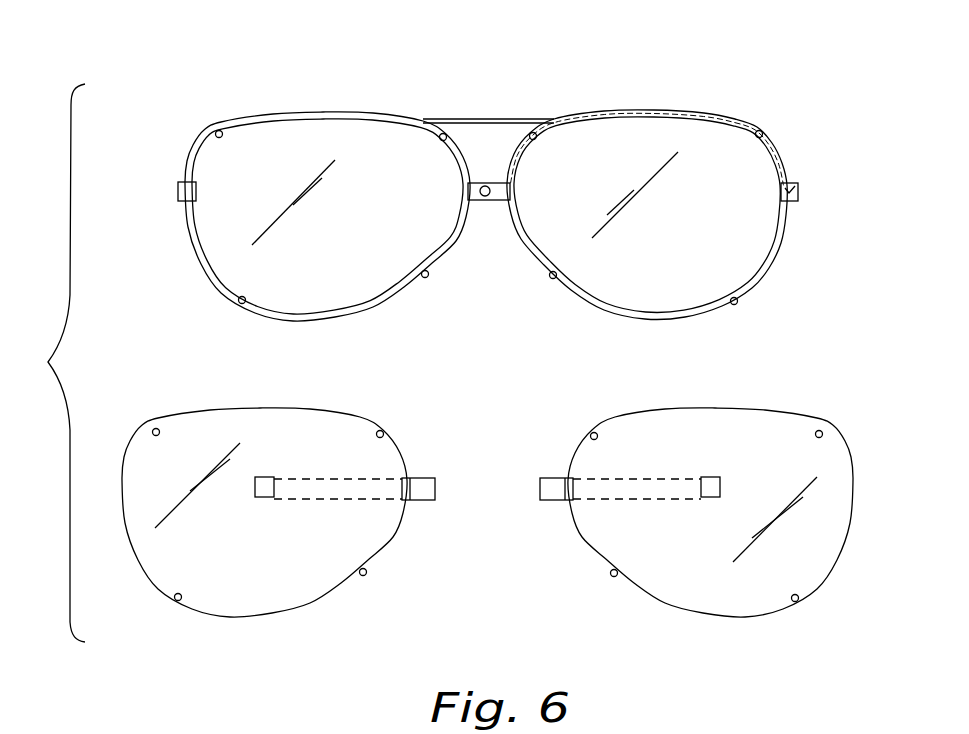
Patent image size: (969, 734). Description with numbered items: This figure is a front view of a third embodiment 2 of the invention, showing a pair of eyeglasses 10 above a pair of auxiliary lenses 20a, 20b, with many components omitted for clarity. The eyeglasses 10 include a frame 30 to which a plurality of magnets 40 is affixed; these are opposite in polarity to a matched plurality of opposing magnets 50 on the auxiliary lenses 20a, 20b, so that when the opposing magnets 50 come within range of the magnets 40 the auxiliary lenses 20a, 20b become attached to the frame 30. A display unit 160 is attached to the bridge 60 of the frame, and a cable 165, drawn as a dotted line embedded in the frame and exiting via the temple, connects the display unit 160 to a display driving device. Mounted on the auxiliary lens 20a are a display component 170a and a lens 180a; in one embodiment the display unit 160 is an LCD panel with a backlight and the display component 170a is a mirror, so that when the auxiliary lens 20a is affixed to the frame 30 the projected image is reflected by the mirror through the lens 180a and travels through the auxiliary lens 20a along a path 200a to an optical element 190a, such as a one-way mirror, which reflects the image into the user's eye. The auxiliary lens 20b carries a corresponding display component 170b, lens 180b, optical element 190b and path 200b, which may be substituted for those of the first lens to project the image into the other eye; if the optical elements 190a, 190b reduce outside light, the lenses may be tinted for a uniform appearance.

The third embodiment 2 is at (56, 363).
The eyeglasses 10 is at (783, 257).
The frame 30 is at (326, 111).
The magnets 40 is at (221, 130).
The opposing magnets 50 is at (155, 429).
The bridge 60 is at (482, 182).
The display unit 160 is at (478, 201).
The cable 165 is at (798, 188).
The auxiliary lens 20a is at (315, 607).
The auxiliary lens 20b is at (674, 611).
The display component 170a is at (411, 501).
The display component 170b is at (564, 501).
The lens 180a is at (405, 490).
The lens 180b is at (560, 490).
The optical element 190a is at (265, 488).
The optical element 190b is at (712, 490).
The path 200a is at (338, 490).
The path 200b is at (637, 490).